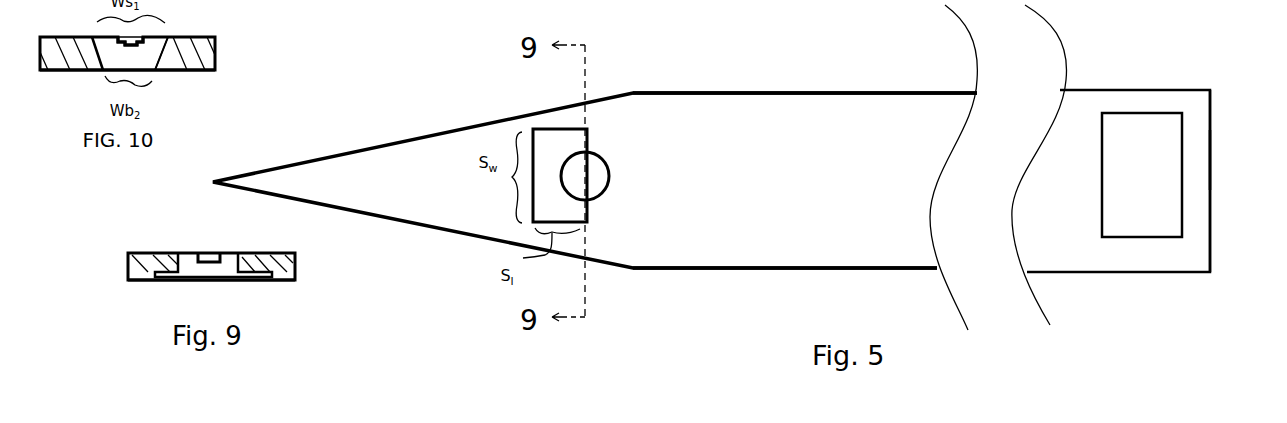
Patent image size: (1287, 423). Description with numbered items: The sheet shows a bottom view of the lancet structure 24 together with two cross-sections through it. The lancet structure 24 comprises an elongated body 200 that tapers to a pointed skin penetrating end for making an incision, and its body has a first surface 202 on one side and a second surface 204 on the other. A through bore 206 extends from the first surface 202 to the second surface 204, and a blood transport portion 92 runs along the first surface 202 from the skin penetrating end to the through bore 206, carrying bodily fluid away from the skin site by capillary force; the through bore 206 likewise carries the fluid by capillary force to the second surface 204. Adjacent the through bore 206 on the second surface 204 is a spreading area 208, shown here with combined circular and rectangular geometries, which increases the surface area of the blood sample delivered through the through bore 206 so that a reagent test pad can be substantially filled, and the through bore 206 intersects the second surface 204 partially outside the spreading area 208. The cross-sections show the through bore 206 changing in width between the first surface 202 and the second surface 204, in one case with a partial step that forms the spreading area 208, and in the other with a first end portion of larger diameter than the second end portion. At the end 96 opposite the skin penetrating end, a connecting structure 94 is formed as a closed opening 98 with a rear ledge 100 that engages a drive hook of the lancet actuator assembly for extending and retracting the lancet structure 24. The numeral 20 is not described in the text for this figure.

In FIG. 10, the insert 20 is at (118, 18).
In FIG. 5, the lancet structure 24 is at (767, 88).
In FIG. 10, the blood transport portion 92 is at (134, 35).
In FIG. 9, the blood transport portion 92 is at (210, 253).
In FIG. 5, the connecting structure 94 is at (1128, 77).
In FIG. 5, the end 96 is at (1216, 110).
In FIG. 5, the closed opening 98 is at (1162, 118).
In FIG. 5, the rear ledge 100 is at (1213, 150).
In FIG. 5, the elongated body 200 is at (676, 89).
In FIG. 10, the first surface 202 is at (213, 35).
In FIG. 9, the first surface 202 is at (287, 252).
In FIG. 10, the second surface 204 is at (210, 71).
In FIG. 9, the second surface 204 is at (286, 282).
In FIG. 5, the second surface 204 is at (793, 255).
In FIG. 9, the through bore 206 is at (230, 253).
In FIG. 5, the through bore 206 is at (609, 164).
In FIG. 9, the spreading area 208 is at (273, 285).
In FIG. 5, the spreading area 208 is at (542, 205).